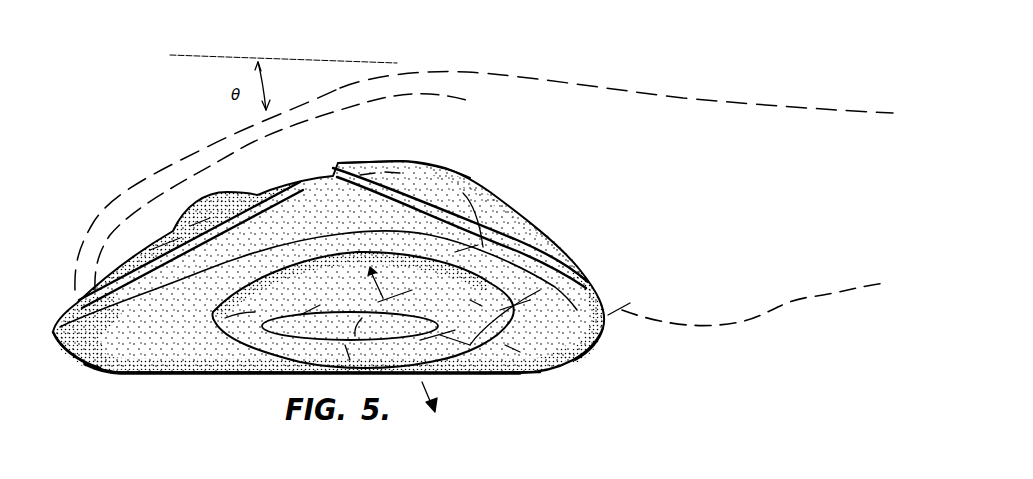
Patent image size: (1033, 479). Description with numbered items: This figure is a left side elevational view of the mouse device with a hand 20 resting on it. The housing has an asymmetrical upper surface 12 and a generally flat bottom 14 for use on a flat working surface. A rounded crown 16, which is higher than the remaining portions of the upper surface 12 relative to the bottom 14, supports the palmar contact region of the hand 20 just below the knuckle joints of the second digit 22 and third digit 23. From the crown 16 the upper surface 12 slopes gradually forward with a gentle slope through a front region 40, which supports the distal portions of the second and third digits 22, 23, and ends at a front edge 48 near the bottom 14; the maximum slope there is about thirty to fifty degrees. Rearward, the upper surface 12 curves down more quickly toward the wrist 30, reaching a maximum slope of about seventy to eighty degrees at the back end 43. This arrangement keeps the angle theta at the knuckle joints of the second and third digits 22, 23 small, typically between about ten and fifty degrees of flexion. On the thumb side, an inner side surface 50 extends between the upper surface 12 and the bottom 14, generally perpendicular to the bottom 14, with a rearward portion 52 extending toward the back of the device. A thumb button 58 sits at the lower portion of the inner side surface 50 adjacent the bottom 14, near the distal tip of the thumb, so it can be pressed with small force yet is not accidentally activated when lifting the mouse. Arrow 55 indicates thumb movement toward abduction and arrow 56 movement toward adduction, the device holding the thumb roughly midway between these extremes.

The upper surface 12 is at (483, 188).
The bottom 14 is at (158, 375).
The crown 16 is at (407, 162).
The hand 20 is at (650, 102).
The second digit 22 is at (142, 221).
The third digit 23 is at (155, 183).
The wrist 30 is at (838, 231).
The front region 40 is at (84, 302).
The back end 43 is at (605, 328).
The front edge 48 is at (54, 336).
The inner side surface 50 is at (212, 318).
The rearward portion 52 is at (520, 378).
The arrow 55 is at (428, 389).
The arrow 56 is at (372, 285).
The thumb button 58 is at (250, 338).